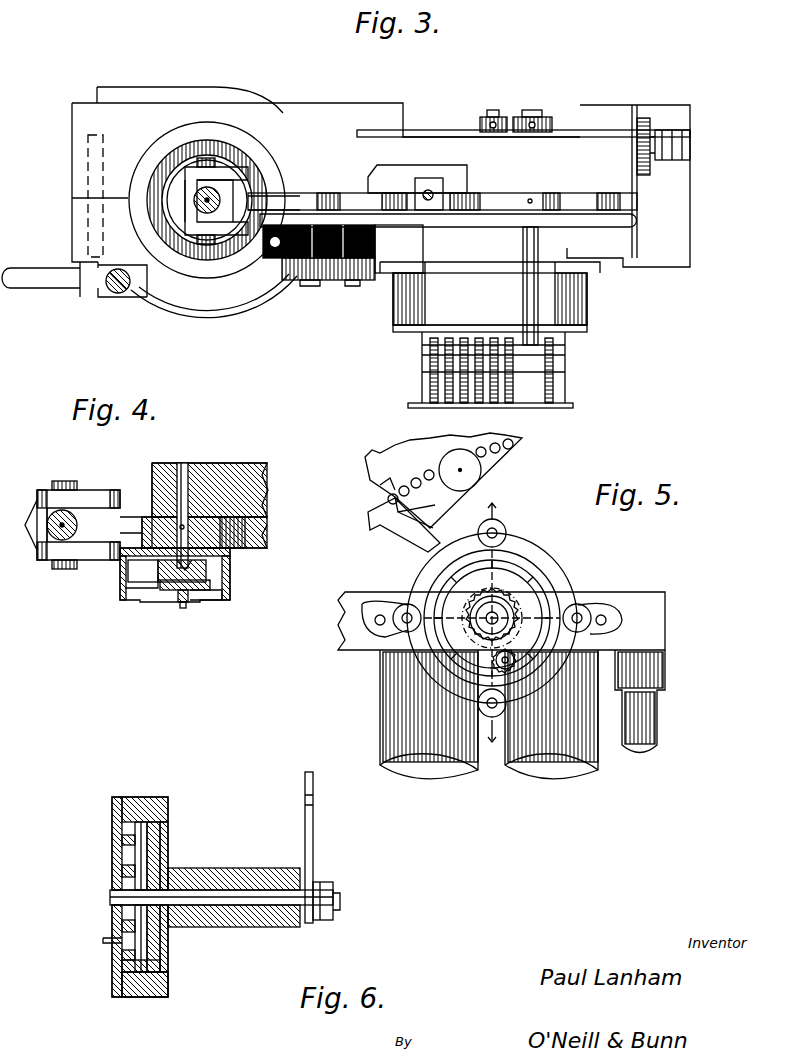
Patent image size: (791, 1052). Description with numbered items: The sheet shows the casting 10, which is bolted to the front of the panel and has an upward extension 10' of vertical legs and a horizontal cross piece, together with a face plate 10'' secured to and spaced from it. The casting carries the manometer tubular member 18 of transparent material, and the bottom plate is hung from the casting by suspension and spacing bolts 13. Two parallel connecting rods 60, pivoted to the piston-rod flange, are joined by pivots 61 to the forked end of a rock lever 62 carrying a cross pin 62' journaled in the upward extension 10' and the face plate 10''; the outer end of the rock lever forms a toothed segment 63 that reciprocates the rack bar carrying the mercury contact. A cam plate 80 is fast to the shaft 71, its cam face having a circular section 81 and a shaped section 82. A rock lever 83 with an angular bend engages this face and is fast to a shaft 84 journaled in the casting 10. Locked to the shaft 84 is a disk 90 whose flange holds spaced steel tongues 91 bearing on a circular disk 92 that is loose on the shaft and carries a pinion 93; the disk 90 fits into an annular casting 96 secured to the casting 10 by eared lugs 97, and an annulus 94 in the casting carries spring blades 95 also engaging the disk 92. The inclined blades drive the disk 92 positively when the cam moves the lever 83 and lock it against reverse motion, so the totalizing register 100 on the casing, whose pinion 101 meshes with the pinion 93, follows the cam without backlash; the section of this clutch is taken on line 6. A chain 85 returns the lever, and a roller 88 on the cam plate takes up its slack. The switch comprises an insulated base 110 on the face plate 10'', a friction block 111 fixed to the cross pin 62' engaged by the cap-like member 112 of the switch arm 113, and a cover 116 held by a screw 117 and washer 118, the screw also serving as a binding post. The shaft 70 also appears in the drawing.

In FIG. 3, the connecting rods 60 is at (185, 187).
In FIG. 4, the connecting rods 60 is at (25, 525).
In FIG. 3, the pivots 61 is at (212, 160).
In FIG. 4, the pivots 61 is at (66, 481).
In FIG. 3, the rock lever 62 is at (287, 144).
In FIG. 4, the rock lever 62 is at (125, 490).
In FIG. 4, the cross pin 62' is at (211, 504).
In FIG. 3, the toothed segment 63 is at (396, 192).
In FIG. 4, the toothed segment 63 is at (268, 525).
In FIG. 3, the shaft 70 is at (485, 198).
In FIG. 3, the shaft 71 is at (533, 117).
In FIG. 3, the cam plate 80 is at (453, 130).
In FIG. 5, the cam plate 80 is at (392, 460).
In FIG. 5, the circular cam face section 81 is at (440, 508).
In FIG. 5, the shaped cam face section 82 is at (372, 470).
In FIG. 5, the rock lever 83 is at (395, 525).
In FIG. 6, the rock lever 83 is at (313, 832).
In FIG. 3, the shaft 84 is at (494, 116).
In FIG. 6, the shaft 84 is at (235, 896).
In FIG. 5, the chain 85 is at (425, 470).
In FIG. 5, the roller 88 is at (475, 477).
In FIG. 6, the disk 90 is at (163, 830).
In FIG. 5, the steel tongues 91 is at (470, 575).
In FIG. 6, the steel tongues 91 is at (165, 964).
In FIG. 5, the circular disk 92 is at (530, 605).
In FIG. 6, the circular disk 92 is at (122, 840).
In FIG. 5, the pinion 93 is at (480, 640).
In FIG. 6, the pinion 93 is at (122, 871).
In FIG. 5, the annulus 94 is at (525, 598).
In FIG. 6, the annulus 94 is at (140, 975).
In FIG. 5, the spring blades 95 is at (515, 562).
In FIG. 6, the spring blades 95 is at (145, 820).
In FIG. 3, the annular casting 96 is at (490, 286).
In FIG. 5, the annular casting 96 is at (542, 560).
In FIG. 6, the annular casting 96 is at (125, 797).
In FIG. 5, the eared lugs 97 is at (382, 632).
In FIG. 3, the totalizing register 100 is at (553, 402).
In FIG. 5, the pinion 101 is at (500, 672).
In FIG. 6, the pinion 101 is at (118, 942).
In FIG. 5, the casting 10 is at (520, 621).
In FIG. 6, the casting 10 is at (254, 912).
In FIG. 3, the upward extension 10' is at (627, 174).
In FIG. 3, the face plate 10'' is at (448, 233).
In FIG. 5, the suspension and spacing bolts 13 is at (645, 716).
In FIG. 5, the tubular member 18 is at (432, 758).
In FIG. 5, the section line 6 is at (492, 503).
In FIG. 4, the insulated base 110 is at (230, 566).
In FIG. 4, the friction block 111 is at (155, 590).
In FIG. 4, the cap-like member 112 is at (180, 585).
In FIG. 4, the switch arm 113 is at (140, 575).
In FIG. 4, the cover 116 is at (220, 600).
In FIG. 4, the screw 117 is at (183, 610).
In FIG. 4, the washer 118 is at (200, 602).